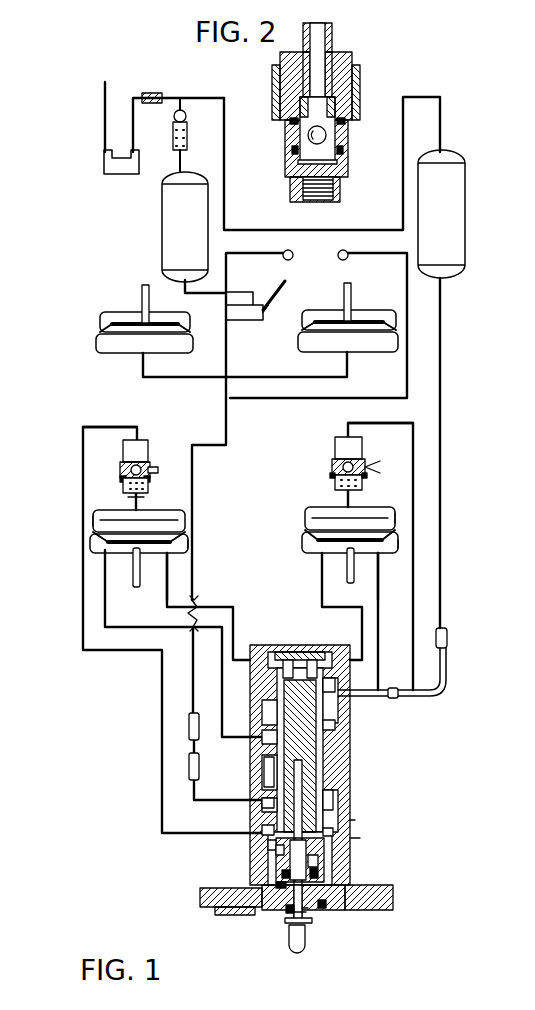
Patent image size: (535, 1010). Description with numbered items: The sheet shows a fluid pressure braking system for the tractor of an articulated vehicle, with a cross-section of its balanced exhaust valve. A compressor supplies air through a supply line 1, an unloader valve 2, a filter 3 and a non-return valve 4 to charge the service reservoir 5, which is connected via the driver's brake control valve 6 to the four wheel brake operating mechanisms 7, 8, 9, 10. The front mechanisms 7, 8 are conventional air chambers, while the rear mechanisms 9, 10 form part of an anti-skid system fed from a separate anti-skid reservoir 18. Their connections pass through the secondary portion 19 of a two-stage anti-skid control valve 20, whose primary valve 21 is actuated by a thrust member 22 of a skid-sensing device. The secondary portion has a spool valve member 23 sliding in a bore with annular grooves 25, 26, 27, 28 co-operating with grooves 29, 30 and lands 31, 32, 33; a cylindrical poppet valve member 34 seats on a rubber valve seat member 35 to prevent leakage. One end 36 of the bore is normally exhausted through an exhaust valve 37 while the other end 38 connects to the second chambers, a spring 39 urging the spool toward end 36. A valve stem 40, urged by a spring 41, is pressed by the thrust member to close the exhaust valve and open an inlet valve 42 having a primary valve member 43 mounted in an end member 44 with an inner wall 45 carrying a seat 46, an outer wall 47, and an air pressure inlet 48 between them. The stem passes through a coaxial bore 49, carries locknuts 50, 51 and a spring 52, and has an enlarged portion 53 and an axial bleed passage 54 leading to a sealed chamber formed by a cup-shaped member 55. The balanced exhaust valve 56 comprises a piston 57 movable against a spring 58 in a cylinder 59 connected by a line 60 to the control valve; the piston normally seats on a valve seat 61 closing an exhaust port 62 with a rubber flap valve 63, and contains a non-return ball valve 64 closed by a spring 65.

In FIG. 1, the supply line 1 is at (106, 110).
In FIG. 1, the unloader valve 2 is at (128, 174).
In FIG. 1, the filter 3 is at (152, 104).
In FIG. 1, the non-return valve 4 is at (188, 134).
In FIG. 1, the compressed air service reservoir 5 is at (185, 227).
In FIG. 1, the driver's brake control valve 6 is at (250, 320).
In FIG. 1, the front wheel brake operating mechanism 7 is at (112, 354).
In FIG. 1, the front wheel brake operating mechanism 8 is at (370, 355).
In FIG. 1, the rear wheel brake operating mechanism 9 is at (112, 548).
In FIG. 1, the rear wheel brake operating mechanism 10 is at (330, 548).
In FIG. 1, the anti-skid reservoir 18 is at (441, 214).
In FIG. 1, the secondary portion 19 is at (352, 770).
In FIG. 1, the two-stage anti-skid control valve 20 is at (328, 846).
In FIG. 1, the primary valve 21 is at (325, 862).
In FIG. 1, the thrust member 22 is at (300, 952).
In FIG. 1, the spool valve member 23 is at (282, 778).
In FIG. 1, the annular groove 25 is at (190, 722).
In FIG. 1, the annular groove 26 is at (190, 762).
In FIG. 1, the annular groove 27 is at (268, 803).
In FIG. 1, the annular groove 28 is at (164, 832).
In FIG. 1, the groove 29 is at (335, 745).
In FIG. 1, the groove 30 is at (300, 788).
In FIG. 1, the land 31 is at (352, 728).
In FIG. 1, the land 32 is at (228, 757).
In FIG. 1, the land 33 is at (268, 825).
In FIG. 1, the cylindrical poppet valve member 34 is at (348, 684).
In FIG. 1, the annular rubber valve seat member 35 is at (372, 690).
In FIG. 1, the end of the bore 36 is at (274, 848).
In FIG. 1, the exhaust valve 37 is at (265, 915).
In FIG. 1, the other end of the bore 38 is at (298, 656).
In FIG. 1, the spring 39 is at (313, 660).
In FIG. 1, the valve stem 40 is at (302, 922).
In FIG. 1, the spring 41 is at (290, 926).
In FIG. 1, the inlet valve 42 is at (338, 906).
In FIG. 1, the primary valve member 43 is at (280, 892).
In FIG. 1, the end member 44 is at (200, 912).
In FIG. 1, the inner wall 45 is at (350, 890).
In FIG. 1, the seat 46 is at (332, 872).
In FIG. 1, the outer wall 47 is at (312, 922).
In FIG. 1, the air pressure inlet 48 is at (322, 908).
In FIG. 1, the coaxial bore 49 is at (290, 880).
In FIG. 1, the locknut 50 is at (355, 822).
In FIG. 1, the locknut 51 is at (330, 832).
In FIG. 1, the spring 52 is at (368, 840).
In FIG. 1, the enlarged portion 53 is at (292, 917).
In FIG. 1, the axial bleed passage 54 is at (262, 848).
In FIG. 1, the cup-shaped member 55 is at (318, 798).
In FIG. 2, the balanced exhaust valve 56 is at (357, 128).
In FIG. 2, the piston 57 is at (355, 110).
In FIG. 1, the piston 57 is at (150, 462).
In FIG. 2, the spring 58 is at (352, 162).
In FIG. 1, the spring 58 is at (148, 440).
In FIG. 1, the cylinder 59 is at (126, 452).
In FIG. 2, the line 60 is at (343, 192).
In FIG. 2, the valve seat 61 is at (292, 96).
In FIG. 1, the valve seat 61 is at (150, 486).
In FIG. 2, the exhaust port 62 is at (348, 100).
In FIG. 1, the exhaust port 62 is at (158, 470).
In FIG. 2, the rubber flap valve 63 is at (283, 118).
In FIG. 2, the non-return ball valve 64 is at (292, 150).
In FIG. 1, the non-return ball valve 64 is at (125, 478).
In FIG. 2, the spring 65 is at (296, 131).
In FIG. 1, the spring 65 is at (130, 497).